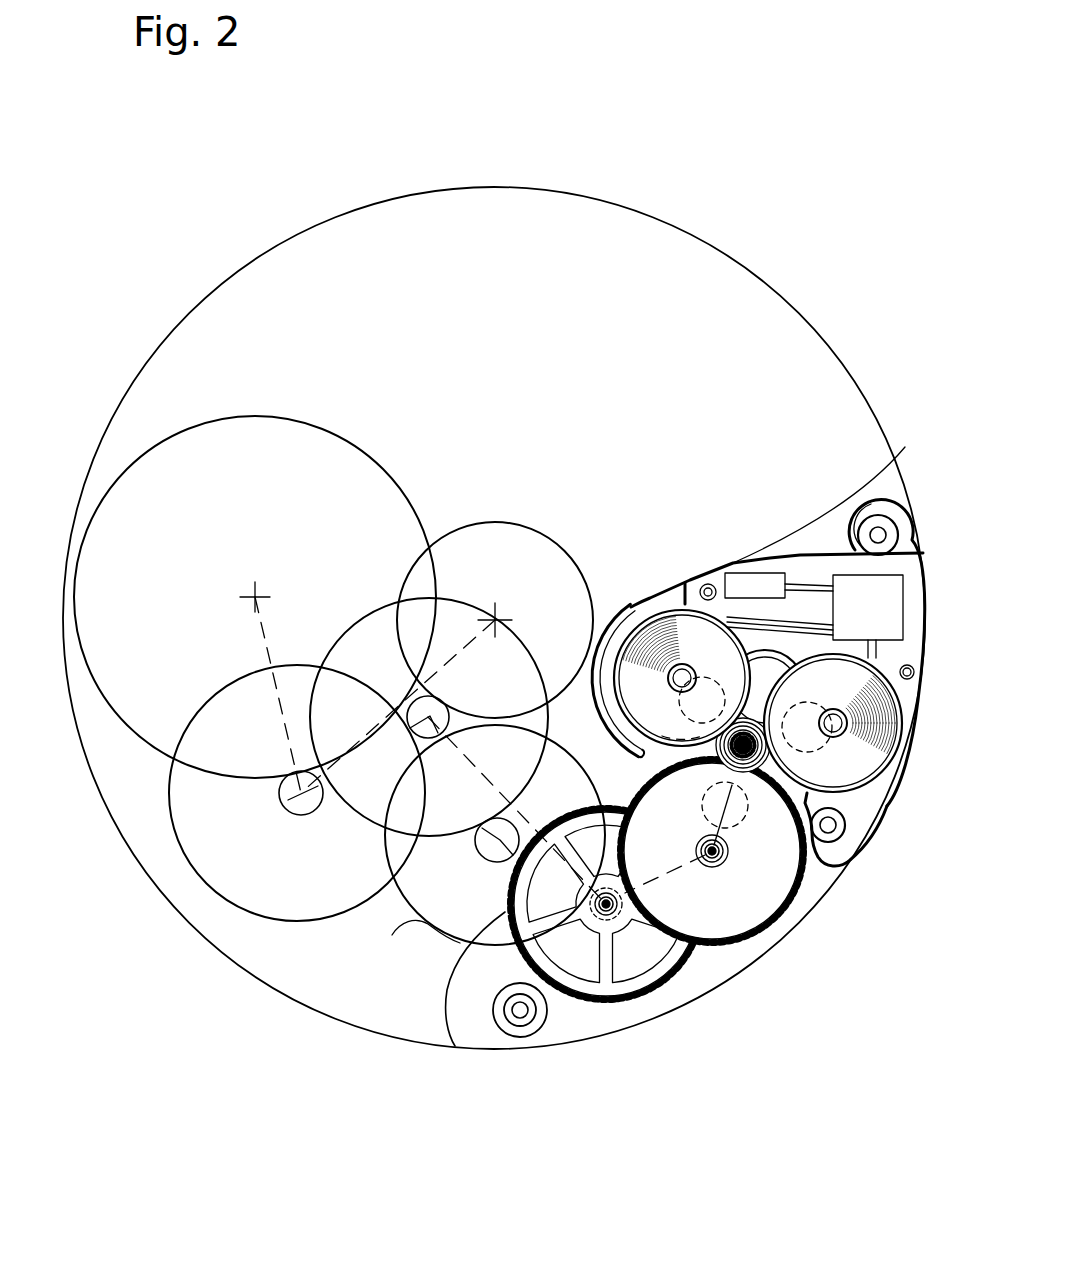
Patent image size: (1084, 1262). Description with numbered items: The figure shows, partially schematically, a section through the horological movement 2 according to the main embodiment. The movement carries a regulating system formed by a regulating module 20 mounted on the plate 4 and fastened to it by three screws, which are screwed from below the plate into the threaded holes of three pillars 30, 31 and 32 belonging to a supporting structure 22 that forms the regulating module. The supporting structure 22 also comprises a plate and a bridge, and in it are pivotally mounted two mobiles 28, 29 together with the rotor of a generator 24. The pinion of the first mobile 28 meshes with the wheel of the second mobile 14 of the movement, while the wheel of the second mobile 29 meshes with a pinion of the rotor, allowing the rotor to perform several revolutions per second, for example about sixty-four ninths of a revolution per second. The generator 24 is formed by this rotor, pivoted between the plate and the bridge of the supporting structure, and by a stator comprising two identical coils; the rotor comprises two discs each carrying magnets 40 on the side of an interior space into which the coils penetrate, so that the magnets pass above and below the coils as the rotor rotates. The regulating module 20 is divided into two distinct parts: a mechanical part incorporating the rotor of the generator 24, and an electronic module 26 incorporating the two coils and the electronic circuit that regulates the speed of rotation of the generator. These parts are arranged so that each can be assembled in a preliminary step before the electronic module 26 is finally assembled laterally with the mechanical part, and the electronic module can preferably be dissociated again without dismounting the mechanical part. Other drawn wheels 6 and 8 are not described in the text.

The horological movement 2 is at (632, 168).
The plate 4 is at (738, 327).
The first display wheel 6 is at (135, 512).
The second display wheel 8 is at (370, 930).
The second mobile 14 is at (392, 935).
The regulating module 20 is at (641, 568).
The supporting structure 22 is at (747, 998).
The generator 24 is at (853, 774).
The electronic module 26 is at (689, 563).
The first mobile 28 is at (627, 987).
The second mobile 29 is at (760, 907).
The pillar 30 is at (878, 535).
The pillar 31 is at (517, 1023).
The pillar 32 is at (848, 838).
The magnets 40 is at (763, 680).